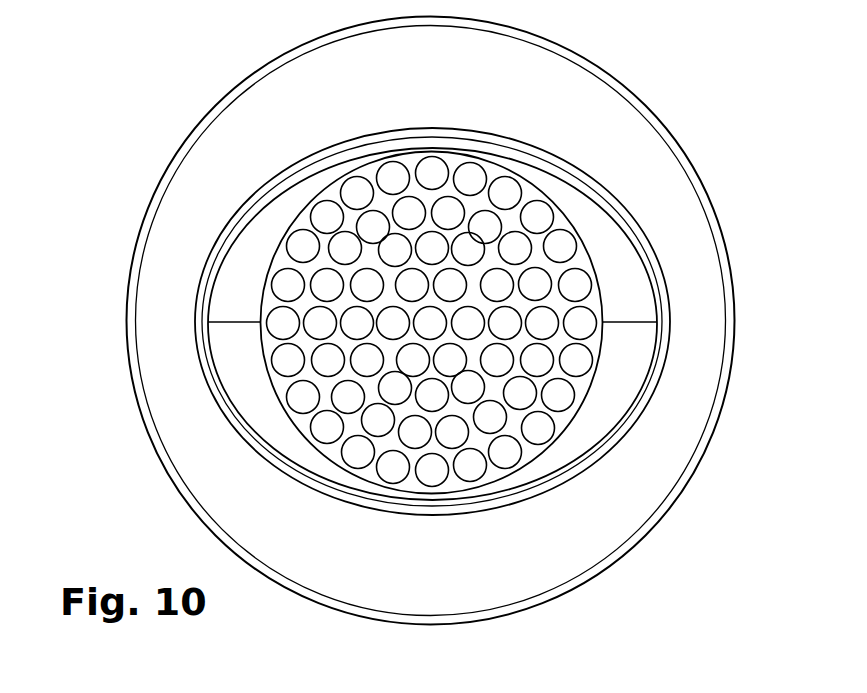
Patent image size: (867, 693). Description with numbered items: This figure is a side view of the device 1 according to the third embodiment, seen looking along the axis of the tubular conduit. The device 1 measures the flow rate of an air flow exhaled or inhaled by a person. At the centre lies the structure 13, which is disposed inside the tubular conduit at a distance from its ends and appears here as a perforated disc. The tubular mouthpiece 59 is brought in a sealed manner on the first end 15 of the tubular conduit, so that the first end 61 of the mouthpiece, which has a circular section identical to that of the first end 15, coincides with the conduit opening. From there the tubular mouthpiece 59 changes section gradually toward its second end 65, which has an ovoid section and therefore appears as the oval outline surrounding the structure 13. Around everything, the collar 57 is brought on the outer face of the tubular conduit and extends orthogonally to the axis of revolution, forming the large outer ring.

The device 1 is at (731, 149).
The structure 13 is at (525, 288).
The first end 15 is at (341, 343).
The first end 61 is at (255, 327).
The collar 57 is at (677, 398).
The tubular mouthpiece 59 is at (670, 360).
The second end 65 is at (237, 435).